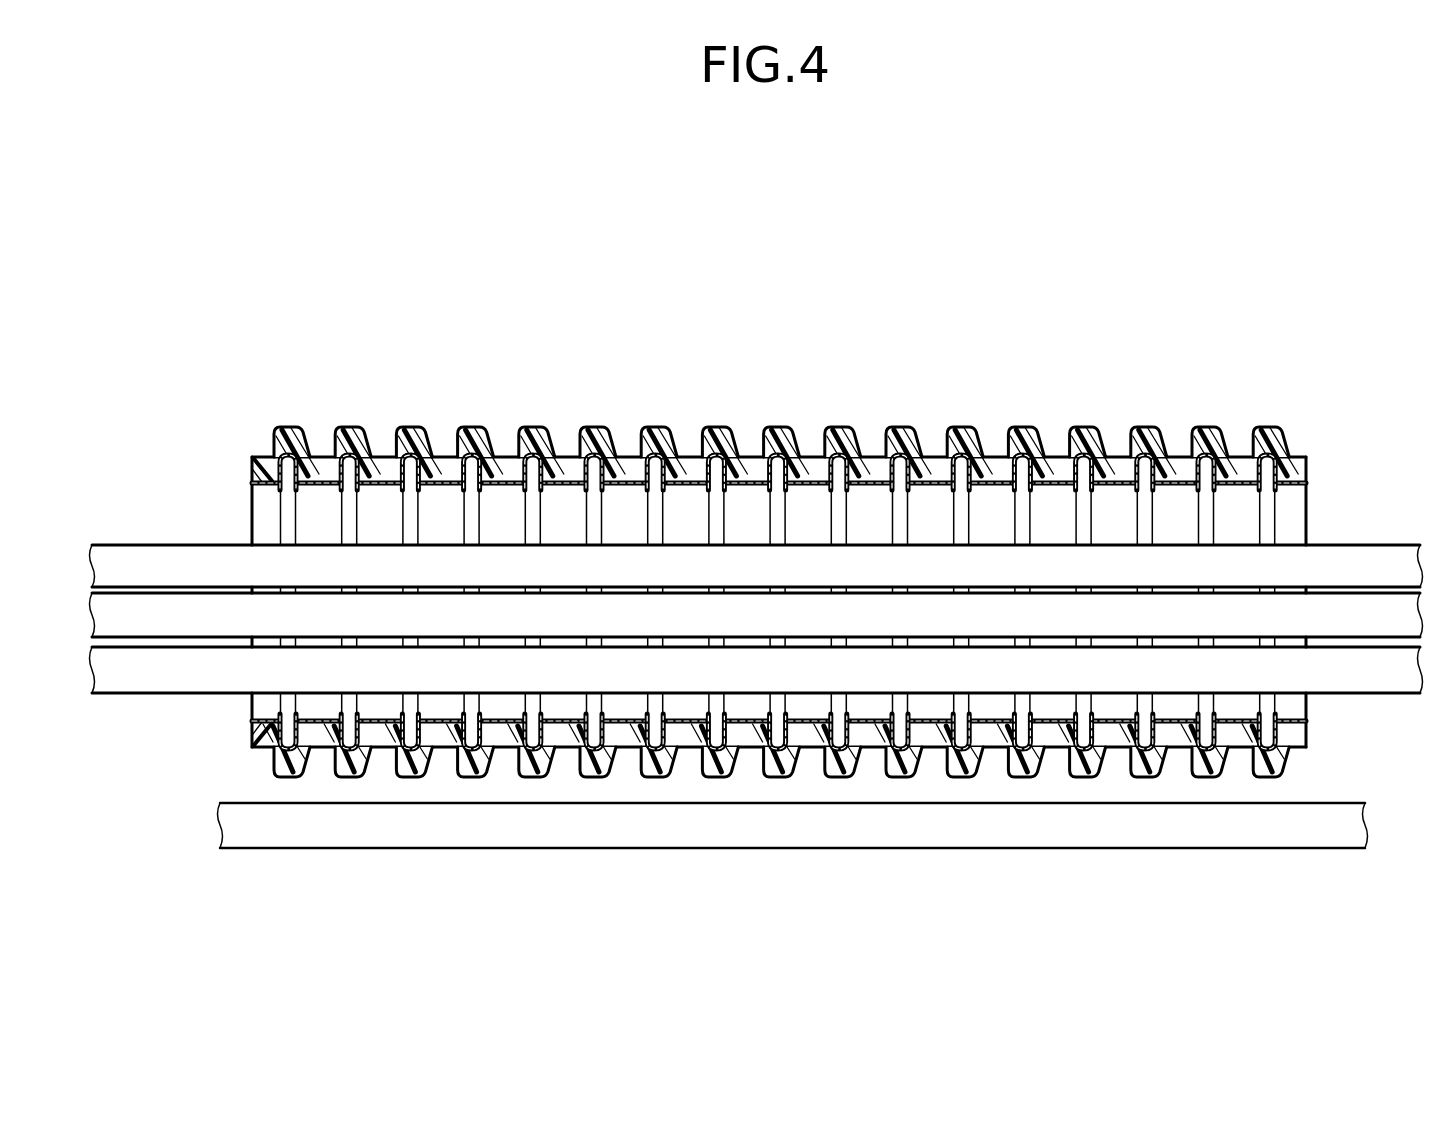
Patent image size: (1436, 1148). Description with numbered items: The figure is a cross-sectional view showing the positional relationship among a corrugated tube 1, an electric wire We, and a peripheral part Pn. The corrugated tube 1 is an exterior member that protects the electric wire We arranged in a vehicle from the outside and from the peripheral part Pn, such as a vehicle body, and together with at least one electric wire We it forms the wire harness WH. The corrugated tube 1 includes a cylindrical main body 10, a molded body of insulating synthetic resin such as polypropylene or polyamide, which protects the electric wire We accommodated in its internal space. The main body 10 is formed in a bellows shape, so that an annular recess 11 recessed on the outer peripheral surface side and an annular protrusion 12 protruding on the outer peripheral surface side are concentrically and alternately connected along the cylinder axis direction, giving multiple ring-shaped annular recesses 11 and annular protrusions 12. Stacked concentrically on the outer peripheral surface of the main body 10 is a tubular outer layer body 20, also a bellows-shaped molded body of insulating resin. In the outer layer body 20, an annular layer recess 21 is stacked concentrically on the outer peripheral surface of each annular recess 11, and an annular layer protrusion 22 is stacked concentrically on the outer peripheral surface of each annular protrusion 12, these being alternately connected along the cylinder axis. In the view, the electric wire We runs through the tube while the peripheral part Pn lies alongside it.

The corrugated tube 1 is at (594, 278).
The main body 10 is at (265, 496).
The annular recess 11 is at (397, 455).
The annular protrusion 12 is at (300, 432).
The outer layer body 20 is at (257, 442).
The annular layer recess 21 is at (380, 455).
The annular layer protrusion 22 is at (288, 428).
The wire harness WH is at (955, 194).
The electric wire We is at (1355, 660).
The peripheral part Pn is at (541, 849).